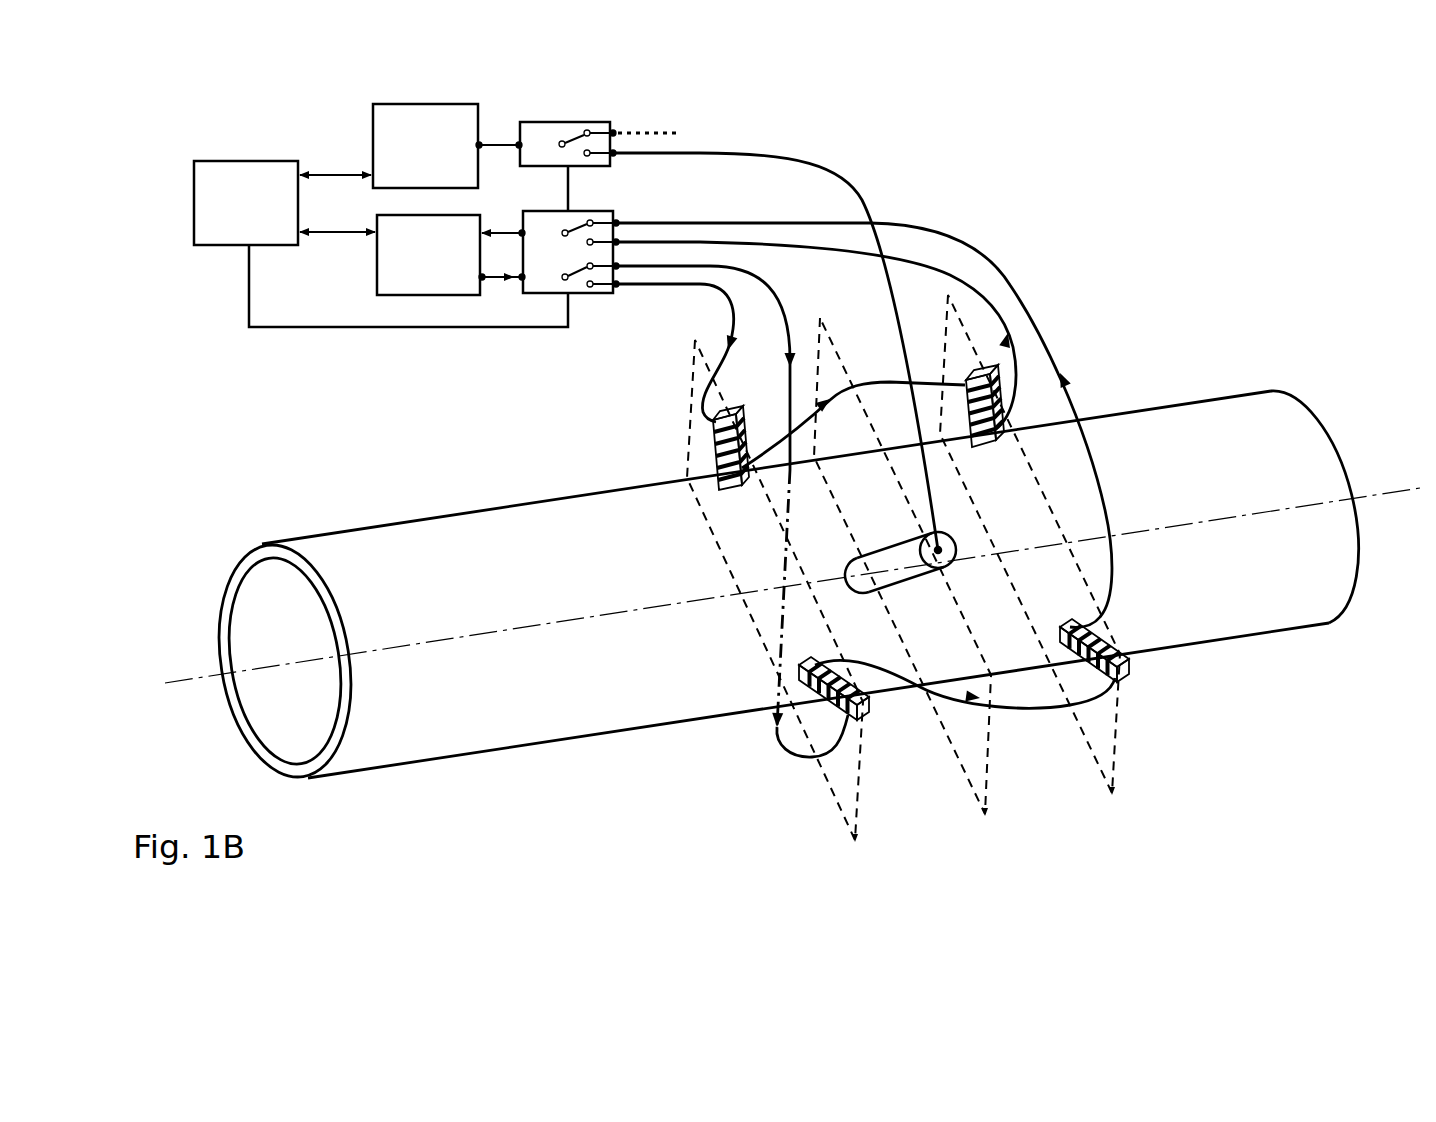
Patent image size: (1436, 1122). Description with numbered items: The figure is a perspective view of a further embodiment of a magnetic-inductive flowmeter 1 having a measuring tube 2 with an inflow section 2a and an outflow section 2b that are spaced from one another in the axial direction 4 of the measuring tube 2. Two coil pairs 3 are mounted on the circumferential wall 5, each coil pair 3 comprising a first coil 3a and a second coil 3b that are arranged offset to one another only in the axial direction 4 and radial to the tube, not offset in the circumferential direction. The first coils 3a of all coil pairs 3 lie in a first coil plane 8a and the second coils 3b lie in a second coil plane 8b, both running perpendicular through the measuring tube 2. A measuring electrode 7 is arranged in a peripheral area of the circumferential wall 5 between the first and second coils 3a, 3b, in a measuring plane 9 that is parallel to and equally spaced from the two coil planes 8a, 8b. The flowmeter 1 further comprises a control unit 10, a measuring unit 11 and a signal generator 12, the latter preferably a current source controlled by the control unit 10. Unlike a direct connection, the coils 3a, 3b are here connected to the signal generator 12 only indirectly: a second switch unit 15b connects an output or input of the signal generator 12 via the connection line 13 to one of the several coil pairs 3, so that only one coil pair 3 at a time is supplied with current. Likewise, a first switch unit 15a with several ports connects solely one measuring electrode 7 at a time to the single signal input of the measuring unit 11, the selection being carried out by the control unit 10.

The magnetic-inductive flowmeter 1 is at (1226, 229).
The measuring tube 2 is at (397, 540).
The inflow section 2a is at (1366, 469).
The outflow section 2b is at (262, 708).
The coil pair 3 is at (664, 440).
The first coil 3a is at (739, 416).
The second coil 3b is at (983, 447).
The axial direction 4 is at (188, 675).
The circumferential wall 5 is at (587, 700).
The measuring electrode 7 is at (910, 570).
The first coil plane 8a is at (833, 798).
The second coil plane 8b is at (1105, 778).
The measuring plane 9 is at (978, 793).
The control unit 10 is at (213, 247).
The measuring unit 11 is at (372, 124).
The signal generator 12 is at (377, 284).
The connection line 13 is at (998, 267).
The first switch unit 15a is at (571, 122).
The second switch unit 15b is at (576, 298).